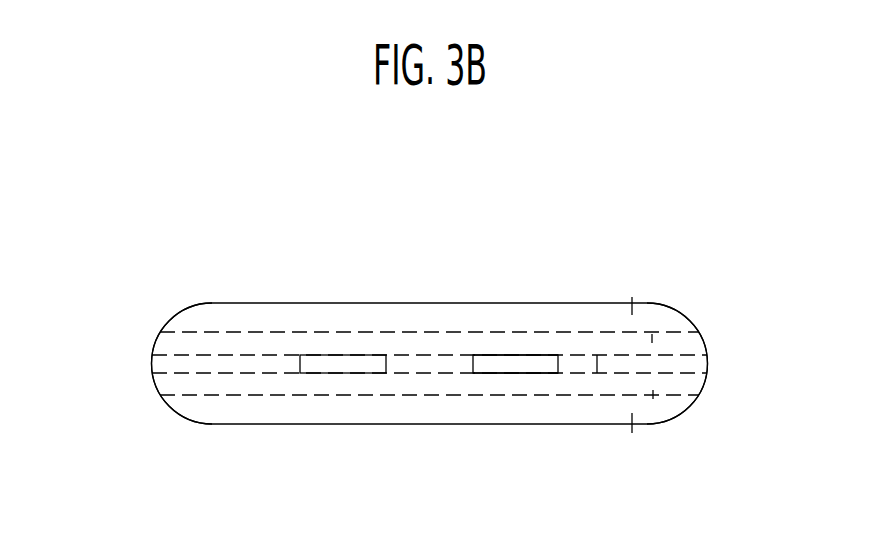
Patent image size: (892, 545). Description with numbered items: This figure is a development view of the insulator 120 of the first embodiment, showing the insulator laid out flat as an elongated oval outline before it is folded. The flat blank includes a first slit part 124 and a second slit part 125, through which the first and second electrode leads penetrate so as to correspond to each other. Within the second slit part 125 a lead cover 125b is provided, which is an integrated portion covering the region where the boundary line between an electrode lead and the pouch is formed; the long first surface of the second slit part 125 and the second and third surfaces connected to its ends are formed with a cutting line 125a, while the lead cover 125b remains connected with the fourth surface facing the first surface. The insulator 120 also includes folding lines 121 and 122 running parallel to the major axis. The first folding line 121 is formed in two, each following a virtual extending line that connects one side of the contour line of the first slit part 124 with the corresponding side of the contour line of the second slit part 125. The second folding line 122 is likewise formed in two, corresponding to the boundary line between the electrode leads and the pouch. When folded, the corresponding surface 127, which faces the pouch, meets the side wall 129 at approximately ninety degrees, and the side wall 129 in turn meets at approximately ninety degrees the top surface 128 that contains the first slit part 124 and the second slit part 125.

The insulator 120 is at (122, 239).
The first folding line 121 is at (670, 375).
The second folding line 122 is at (196, 331).
The first slit part 124 is at (348, 365).
The second slit part 125 is at (509, 364).
The cutting line 125a is at (500, 355).
The lead cover 125b is at (500, 373).
The corresponding surface 127 is at (632, 297).
The top surface 128 is at (597, 362).
The side wall 129 is at (652, 343).